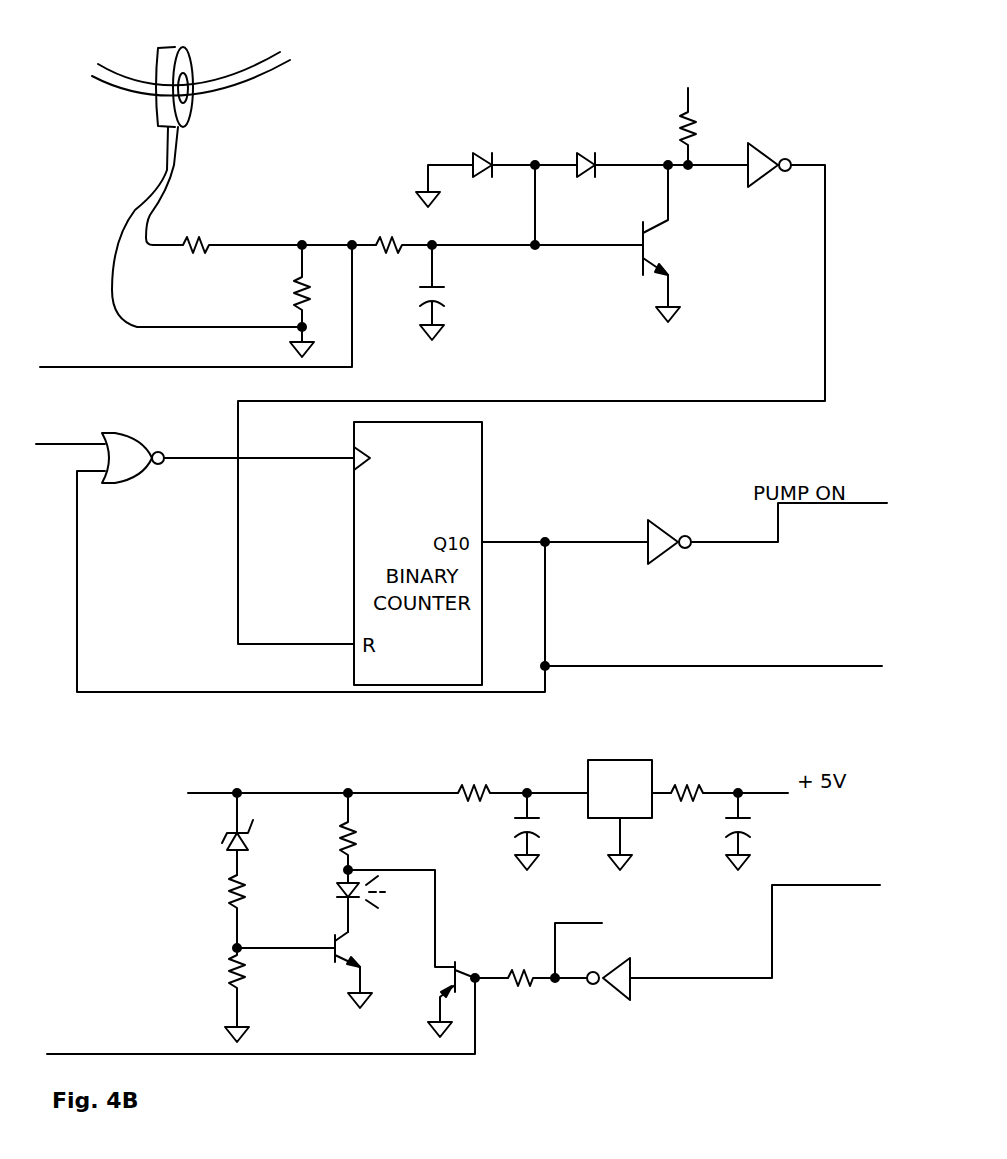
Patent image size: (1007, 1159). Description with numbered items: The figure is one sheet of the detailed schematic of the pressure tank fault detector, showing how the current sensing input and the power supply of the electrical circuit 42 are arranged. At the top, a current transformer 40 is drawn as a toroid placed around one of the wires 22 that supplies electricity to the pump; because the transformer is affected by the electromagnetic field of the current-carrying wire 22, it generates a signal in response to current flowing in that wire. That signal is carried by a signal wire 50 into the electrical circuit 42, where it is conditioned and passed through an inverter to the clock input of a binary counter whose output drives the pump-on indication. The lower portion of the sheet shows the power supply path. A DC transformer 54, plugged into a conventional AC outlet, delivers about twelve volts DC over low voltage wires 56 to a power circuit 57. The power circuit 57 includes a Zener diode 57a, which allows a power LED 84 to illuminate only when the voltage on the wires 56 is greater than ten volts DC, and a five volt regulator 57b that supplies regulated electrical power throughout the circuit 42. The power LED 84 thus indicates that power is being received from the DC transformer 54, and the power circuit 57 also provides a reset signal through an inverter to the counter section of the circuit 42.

The current transformer 40 is at (155, 115).
The wire 22 is at (243, 85).
The signal wire 50 is at (142, 207).
The electrical circuit 42 is at (821, 47).
The DC transformer 54 is at (137, 773).
The low voltage wires 56 is at (197, 800).
The Zener diode 57a is at (264, 818).
The 5V regulator 57b is at (693, 732).
The power circuit 57 is at (644, 1014).
The power LED 84 is at (312, 920).